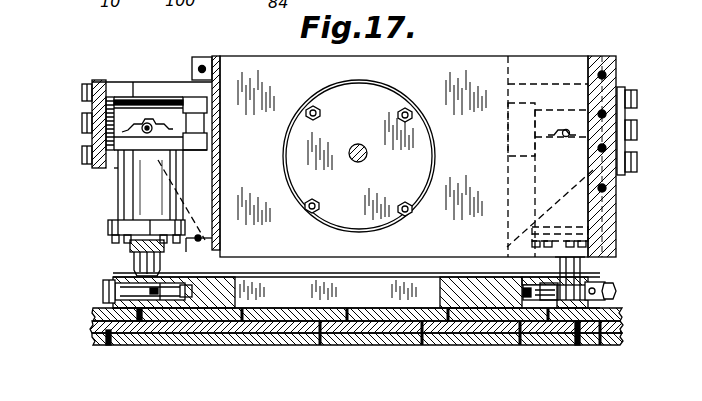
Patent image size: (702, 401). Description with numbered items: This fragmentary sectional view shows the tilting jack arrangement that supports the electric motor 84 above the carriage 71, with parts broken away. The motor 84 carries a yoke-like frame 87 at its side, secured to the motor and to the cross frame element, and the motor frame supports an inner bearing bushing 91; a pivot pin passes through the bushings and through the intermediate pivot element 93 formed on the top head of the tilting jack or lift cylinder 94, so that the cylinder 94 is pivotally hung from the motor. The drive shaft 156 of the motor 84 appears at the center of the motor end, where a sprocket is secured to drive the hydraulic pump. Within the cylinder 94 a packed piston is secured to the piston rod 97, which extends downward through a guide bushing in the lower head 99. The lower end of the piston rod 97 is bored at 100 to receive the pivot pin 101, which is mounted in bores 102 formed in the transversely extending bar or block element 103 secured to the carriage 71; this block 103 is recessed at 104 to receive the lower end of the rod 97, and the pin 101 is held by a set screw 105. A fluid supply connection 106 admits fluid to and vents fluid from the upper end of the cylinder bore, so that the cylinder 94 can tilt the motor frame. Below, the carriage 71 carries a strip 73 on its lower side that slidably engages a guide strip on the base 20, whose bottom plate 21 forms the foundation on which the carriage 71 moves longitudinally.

The electric motor 84 is at (482, 75).
The drive shaft 156 is at (360, 145).
The yoke-like frame 87 is at (138, 85).
The intermediate pivot element 93 is at (149, 104).
The fluid supply connection 106 is at (120, 136).
The inner bearing bushing 91 is at (213, 144).
The tilting jack or lift cylinder 94 is at (123, 193).
The lower head 99 is at (118, 228).
The piston rod 97 is at (128, 256).
The pivot pin 101 is at (115, 290).
The set screw 105 is at (607, 281).
The bore 100 is at (156, 292).
The bore 102 is at (187, 292).
The transversely extending bar or block element 103 is at (492, 295).
The bottom plate or base plate 21 is at (263, 343).
The base or base portion 20 is at (315, 343).
The strip 73 is at (387, 323).
The carriage 71 is at (415, 323).
The recess 104 is at (112, 345).